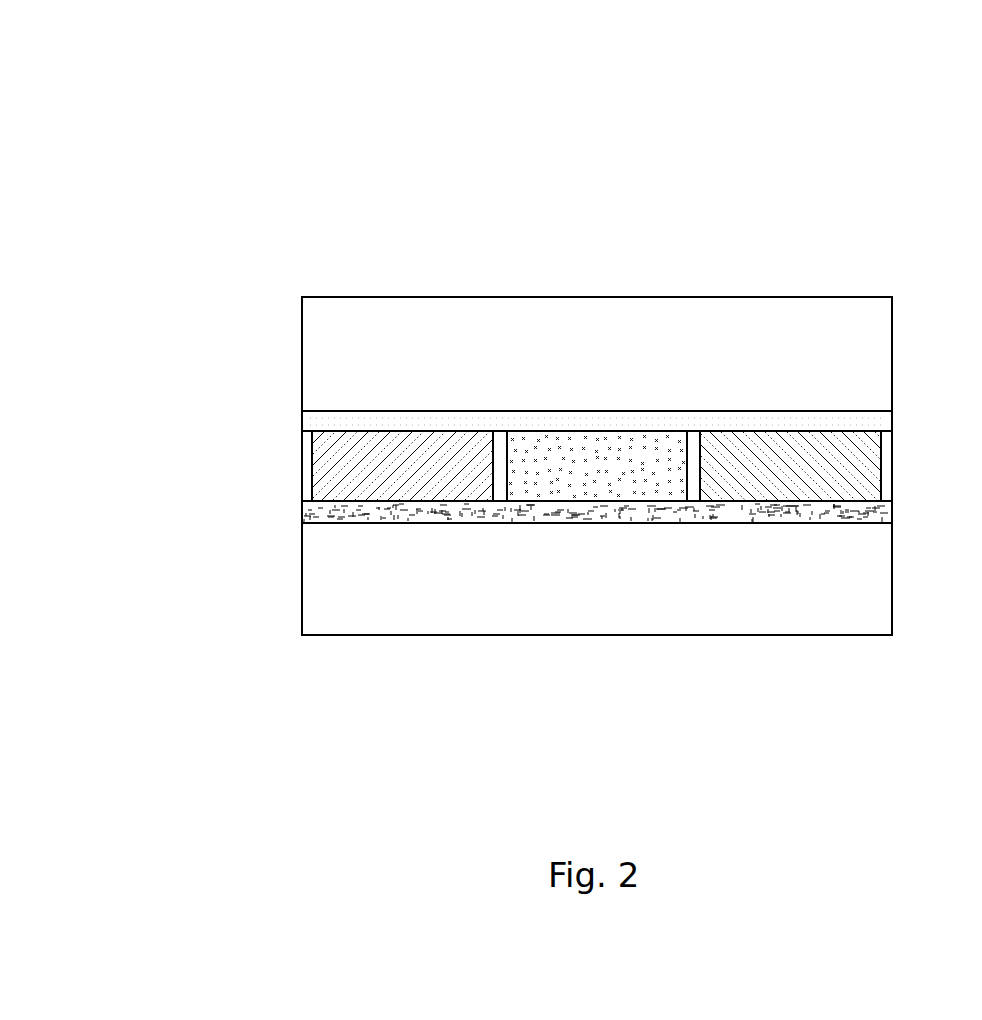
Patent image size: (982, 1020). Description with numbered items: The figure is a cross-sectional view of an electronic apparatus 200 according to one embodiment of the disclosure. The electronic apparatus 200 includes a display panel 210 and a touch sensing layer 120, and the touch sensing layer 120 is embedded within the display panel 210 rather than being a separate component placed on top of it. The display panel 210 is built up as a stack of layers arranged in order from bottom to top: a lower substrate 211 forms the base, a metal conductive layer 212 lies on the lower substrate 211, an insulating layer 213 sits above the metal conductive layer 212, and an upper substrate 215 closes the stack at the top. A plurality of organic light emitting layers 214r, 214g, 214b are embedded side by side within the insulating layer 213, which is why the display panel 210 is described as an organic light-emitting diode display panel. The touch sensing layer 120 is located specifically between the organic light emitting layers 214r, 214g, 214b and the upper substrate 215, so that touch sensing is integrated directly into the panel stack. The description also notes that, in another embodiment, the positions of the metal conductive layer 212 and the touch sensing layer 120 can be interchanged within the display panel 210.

The electronic apparatus 200 is at (85, 52).
The display panel 210 is at (216, 376).
The lower substrate 211 is at (887, 581).
The metal conductive layer 212 is at (887, 510).
The insulating layer 213 is at (887, 468).
The organic light emitting layer 214r is at (400, 443).
The organic light emitting layer 214g is at (595, 443).
The organic light emitting layer 214b is at (788, 443).
The touch sensing layer 120 is at (887, 421).
The upper substrate 215 is at (887, 361).